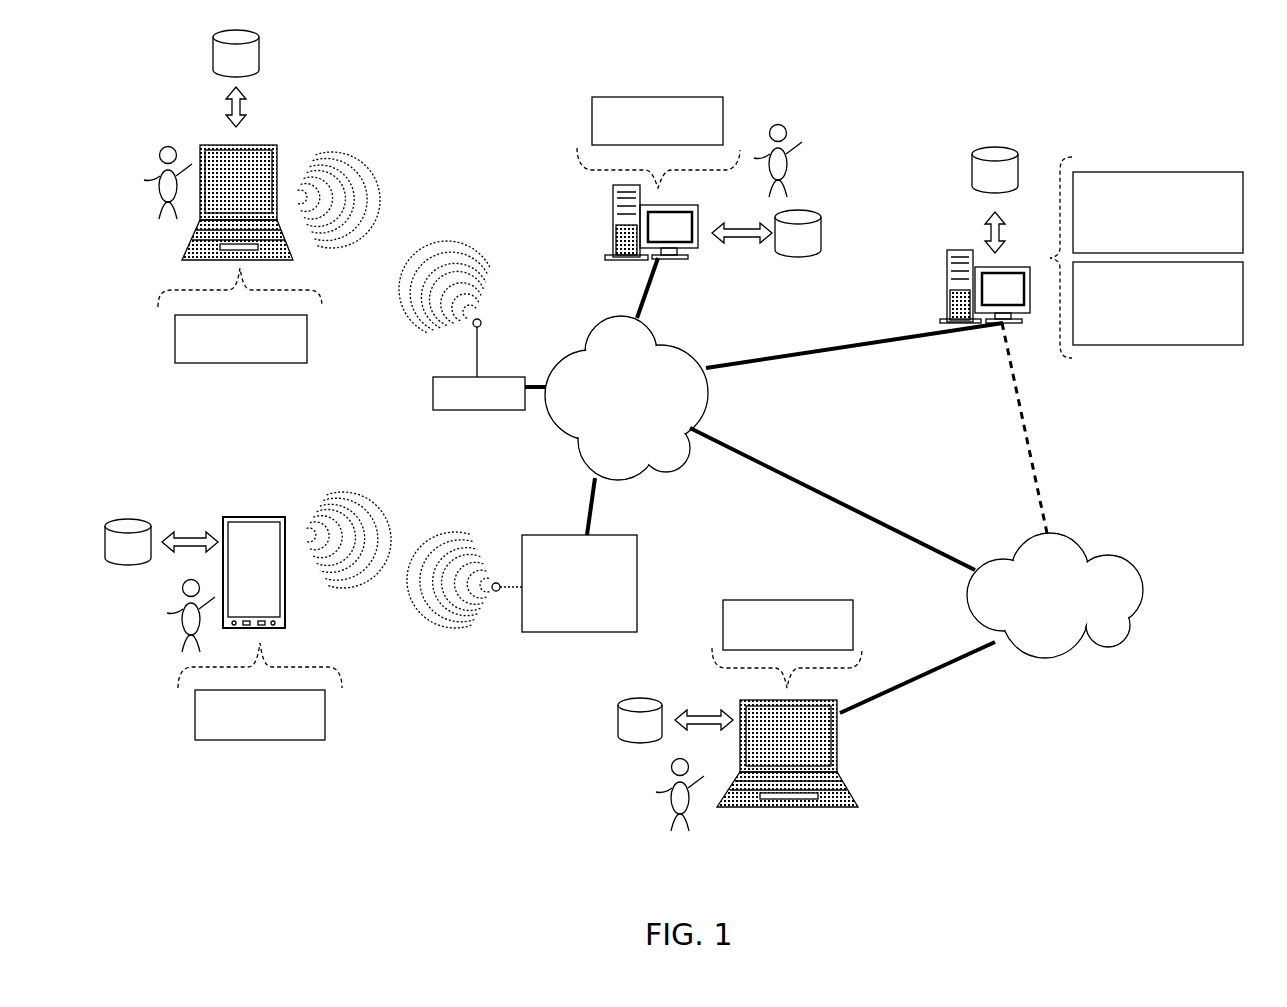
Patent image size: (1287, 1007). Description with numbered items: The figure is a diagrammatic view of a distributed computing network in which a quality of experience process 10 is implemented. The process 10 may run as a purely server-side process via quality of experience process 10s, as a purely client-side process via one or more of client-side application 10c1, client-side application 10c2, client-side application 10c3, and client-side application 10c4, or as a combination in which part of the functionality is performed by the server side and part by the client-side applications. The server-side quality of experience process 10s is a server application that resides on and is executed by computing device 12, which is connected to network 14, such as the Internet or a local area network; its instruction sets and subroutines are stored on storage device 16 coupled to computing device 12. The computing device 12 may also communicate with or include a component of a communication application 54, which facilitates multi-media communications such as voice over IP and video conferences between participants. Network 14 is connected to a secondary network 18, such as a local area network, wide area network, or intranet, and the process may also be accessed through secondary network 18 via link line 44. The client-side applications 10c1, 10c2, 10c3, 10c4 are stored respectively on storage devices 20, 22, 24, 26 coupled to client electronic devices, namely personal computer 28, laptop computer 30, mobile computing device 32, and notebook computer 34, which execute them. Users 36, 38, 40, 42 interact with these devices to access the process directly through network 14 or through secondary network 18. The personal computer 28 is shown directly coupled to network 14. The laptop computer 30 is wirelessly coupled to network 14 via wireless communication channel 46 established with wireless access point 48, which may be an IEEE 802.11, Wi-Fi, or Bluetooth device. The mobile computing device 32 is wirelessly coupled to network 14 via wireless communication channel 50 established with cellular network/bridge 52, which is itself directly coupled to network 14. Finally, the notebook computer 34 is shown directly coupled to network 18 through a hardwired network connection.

The quality of experience process 10 is at (1099, 101).
The client-side application 10c1 is at (723, 122).
The client-side application 10c2 is at (307, 340).
The client-side application 10c3 is at (325, 715).
The client-side application 10c4 is at (853, 615).
The quality of experience process (server-side) 10s is at (1243, 213).
The computing device 12 is at (950, 263).
The network 14 is at (626, 398).
The storage device 16 is at (995, 170).
The secondary network 18 is at (1055, 595).
The storage device 20 is at (798, 233).
The storage device 22 is at (236, 53).
The storage device 24 is at (128, 542).
The storage device 26 is at (640, 720).
The personal computer 28 is at (700, 222).
The laptop computer 30 is at (279, 162).
The mobile computing device 32 is at (297, 569).
The notebook computer 34 is at (837, 748).
The user 36 is at (797, 142).
The user 38 is at (133, 173).
The user 40 is at (168, 597).
The user 42 is at (647, 783).
The link line 44 is at (998, 433).
The wireless communication channel 46 is at (418, 217).
The wireless access point (WAP) 48 is at (427, 393).
The wireless communication channel 50 is at (412, 533).
The cellular network/bridge 52 is at (637, 550).
The communication application 54 is at (1243, 302).